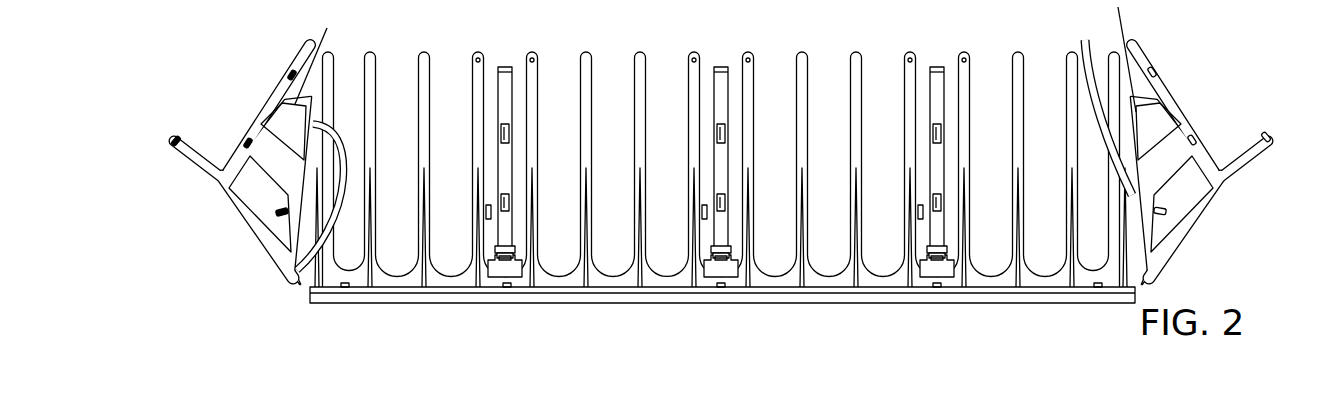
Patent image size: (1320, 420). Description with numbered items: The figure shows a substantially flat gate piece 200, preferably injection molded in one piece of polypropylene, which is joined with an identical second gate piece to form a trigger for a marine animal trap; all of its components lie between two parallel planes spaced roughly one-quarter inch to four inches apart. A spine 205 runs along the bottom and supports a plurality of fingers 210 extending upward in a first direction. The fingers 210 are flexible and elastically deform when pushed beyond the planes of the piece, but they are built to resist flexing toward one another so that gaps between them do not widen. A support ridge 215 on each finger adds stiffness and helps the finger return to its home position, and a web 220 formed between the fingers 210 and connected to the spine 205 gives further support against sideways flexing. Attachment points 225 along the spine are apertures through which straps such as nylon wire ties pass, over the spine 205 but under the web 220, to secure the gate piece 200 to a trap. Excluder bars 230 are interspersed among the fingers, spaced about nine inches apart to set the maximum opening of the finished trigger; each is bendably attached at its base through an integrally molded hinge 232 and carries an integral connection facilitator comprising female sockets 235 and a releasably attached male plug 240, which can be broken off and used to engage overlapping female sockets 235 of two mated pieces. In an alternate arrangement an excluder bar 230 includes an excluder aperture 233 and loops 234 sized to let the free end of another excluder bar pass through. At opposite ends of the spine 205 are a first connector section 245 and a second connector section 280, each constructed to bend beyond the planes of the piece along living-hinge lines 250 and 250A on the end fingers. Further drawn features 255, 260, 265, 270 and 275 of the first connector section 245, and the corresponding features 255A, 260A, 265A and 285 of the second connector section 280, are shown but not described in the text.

The flat gate piece 200 is at (703, 44).
The spine 205 is at (822, 297).
The fingers 210 is at (331, 56).
The support ridge 215 is at (425, 277).
The web 220 is at (1020, 292).
The attachment points 225 is at (345, 291).
The excluder bars 230 is at (505, 66).
The integrally molded hinge 232 is at (500, 277).
The excluder aperture 233 is at (510, 258).
The loop 234 is at (506, 244).
The female sockets 235 is at (501, 130).
The male plug 240 is at (487, 213).
The first connector section 245 is at (264, 148).
The line 250 is at (328, 197).
The lower arm 255 is at (246, 238).
The upper arm 260 is at (262, 114).
The web 265 is at (270, 170).
The strut 270 is at (321, 36).
The fasteners 275 is at (287, 72).
The second connector section 280 is at (1170, 151).
The line 250A is at (1098, 103).
The lower arm 255A is at (1183, 244).
The upper arm 260A is at (1174, 94).
The web 265A is at (1170, 175).
The fasteners 285 is at (1154, 68).